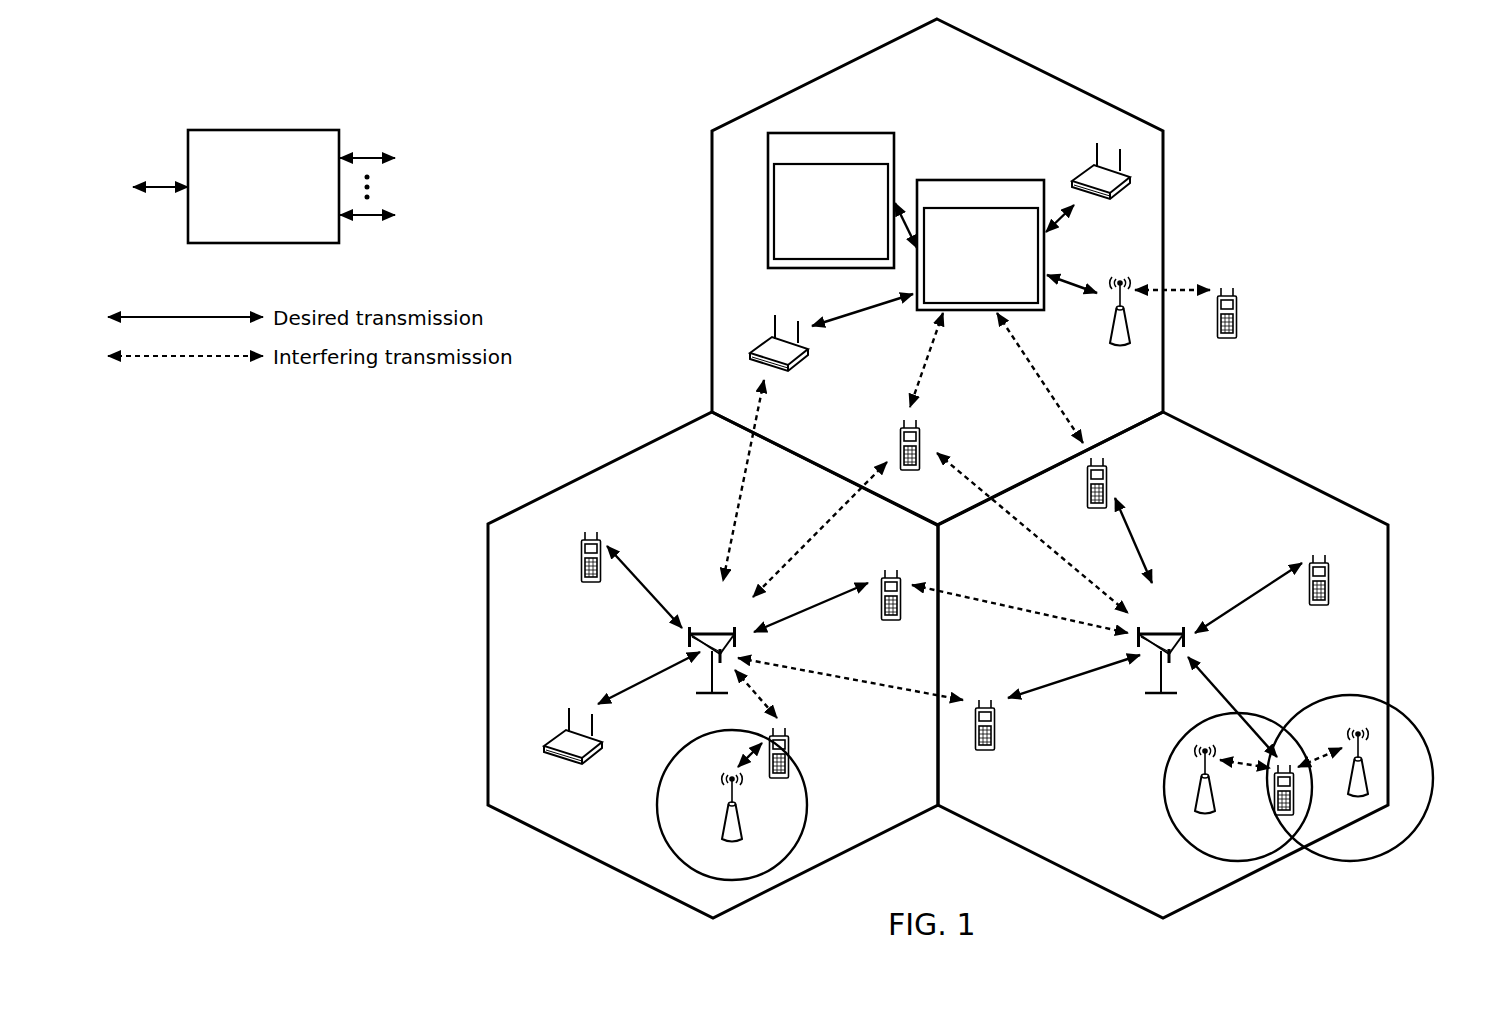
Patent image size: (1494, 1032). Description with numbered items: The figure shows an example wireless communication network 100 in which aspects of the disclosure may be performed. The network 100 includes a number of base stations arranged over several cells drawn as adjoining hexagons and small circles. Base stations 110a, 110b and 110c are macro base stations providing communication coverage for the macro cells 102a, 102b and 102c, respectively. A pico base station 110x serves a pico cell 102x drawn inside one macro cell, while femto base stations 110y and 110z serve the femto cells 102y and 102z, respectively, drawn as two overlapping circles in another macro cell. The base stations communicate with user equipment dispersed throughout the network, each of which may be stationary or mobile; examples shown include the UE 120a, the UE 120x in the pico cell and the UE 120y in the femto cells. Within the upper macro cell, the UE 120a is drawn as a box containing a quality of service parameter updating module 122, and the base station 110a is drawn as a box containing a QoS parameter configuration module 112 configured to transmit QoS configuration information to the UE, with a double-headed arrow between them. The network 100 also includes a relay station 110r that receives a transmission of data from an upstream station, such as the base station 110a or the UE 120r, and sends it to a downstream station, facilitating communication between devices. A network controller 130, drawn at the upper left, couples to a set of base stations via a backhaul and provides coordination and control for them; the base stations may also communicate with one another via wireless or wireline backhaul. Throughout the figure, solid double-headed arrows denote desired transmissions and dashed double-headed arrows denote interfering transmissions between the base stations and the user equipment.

The wireless communication network 100 is at (1313, 92).
The macro cell 102a is at (1049, 74).
The macro cell 102b is at (606, 466).
The macro cell 102c is at (1275, 466).
The pico cell 102x is at (680, 747).
The femto cell 102y is at (1166, 751).
The femto cell 102z is at (1336, 694).
The base station 110a is at (964, 249).
The base station 110b is at (711, 629).
The base station 110c is at (1161, 629).
The relay station 110r is at (1107, 328).
The pico base station 110x is at (742, 839).
The femto base station 110y is at (1214, 807).
The femto base station 110z is at (1370, 797).
The QoS parameter configuration module 112 is at (930, 305).
The user equipment 120a is at (806, 187).
The user equipment 120r is at (1238, 335).
The user equipment 120x is at (790, 744).
The user equipment 120y is at (1272, 813).
The QoS parameter updating module 122 is at (774, 232).
The network controller 130 is at (266, 130).